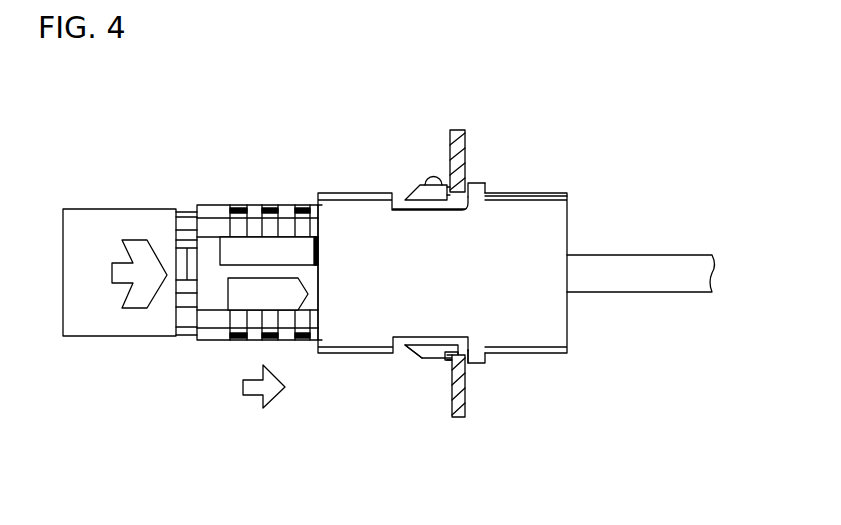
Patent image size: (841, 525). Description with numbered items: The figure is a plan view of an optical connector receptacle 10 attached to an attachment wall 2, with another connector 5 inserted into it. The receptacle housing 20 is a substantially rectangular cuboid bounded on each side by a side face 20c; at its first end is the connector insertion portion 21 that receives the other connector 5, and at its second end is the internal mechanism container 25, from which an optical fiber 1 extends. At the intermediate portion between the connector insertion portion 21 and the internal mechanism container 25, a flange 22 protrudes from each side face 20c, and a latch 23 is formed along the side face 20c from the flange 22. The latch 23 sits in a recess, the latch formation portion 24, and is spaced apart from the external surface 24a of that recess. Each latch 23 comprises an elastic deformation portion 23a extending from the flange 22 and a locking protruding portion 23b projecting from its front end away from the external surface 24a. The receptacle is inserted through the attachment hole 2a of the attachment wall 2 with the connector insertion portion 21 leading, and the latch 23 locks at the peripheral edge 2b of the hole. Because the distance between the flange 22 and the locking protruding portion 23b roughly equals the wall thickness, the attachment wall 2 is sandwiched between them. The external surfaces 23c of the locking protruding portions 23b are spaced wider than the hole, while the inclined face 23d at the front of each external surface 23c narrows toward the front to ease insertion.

The optical fiber 1 is at (656, 252).
The attachment wall 2 is at (471, 421).
The attachment hole 2a is at (450, 355).
The peripheral edge 2b is at (447, 360).
The another connector 5 is at (236, 204).
The optical connector receptacle 10 is at (461, 271).
The receptacle housing 20 is at (550, 215).
The side face 20c is at (333, 190).
The connector insertion portion 21 is at (352, 192).
The flange 22 is at (480, 180).
The latch 23 is at (533, 255).
The elastic deformation portion 23a is at (465, 185).
The locking protruding portion 23b is at (413, 198).
The external surface 23c is at (403, 197).
The inclined face 23d is at (392, 258).
The latch formation portion 24 is at (392, 382).
The external surface 24a is at (400, 353).
The internal mechanism container 25 is at (532, 192).